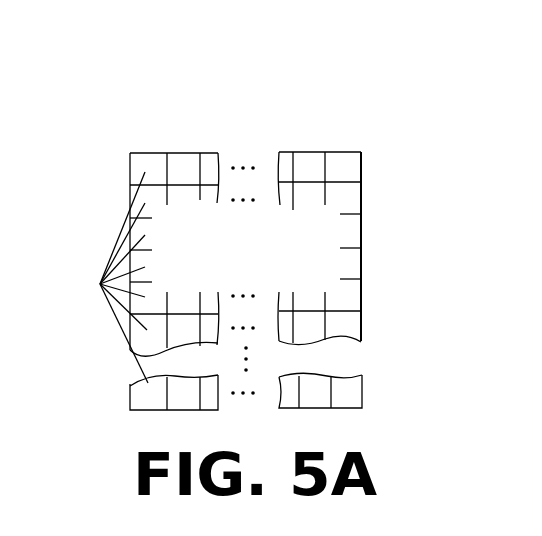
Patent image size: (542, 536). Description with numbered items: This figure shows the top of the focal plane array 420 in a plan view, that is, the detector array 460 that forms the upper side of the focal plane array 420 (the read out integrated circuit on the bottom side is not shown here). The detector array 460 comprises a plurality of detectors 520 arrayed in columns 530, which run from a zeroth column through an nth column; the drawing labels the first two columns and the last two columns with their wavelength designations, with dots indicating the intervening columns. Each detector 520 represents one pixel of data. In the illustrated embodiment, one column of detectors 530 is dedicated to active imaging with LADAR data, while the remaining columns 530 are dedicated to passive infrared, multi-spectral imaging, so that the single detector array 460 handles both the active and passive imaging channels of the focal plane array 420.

The focal plane array 420 is at (449, 31).
The detector array 460 is at (246, 281).
The columns of detectors 530 is at (165, 105).
The detectors 520 is at (100, 286).